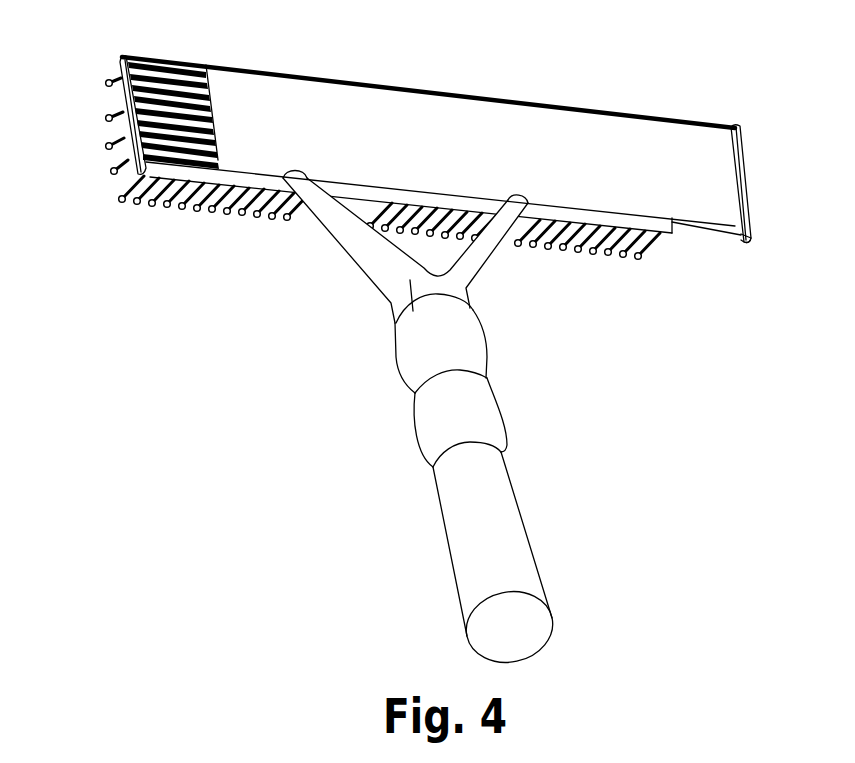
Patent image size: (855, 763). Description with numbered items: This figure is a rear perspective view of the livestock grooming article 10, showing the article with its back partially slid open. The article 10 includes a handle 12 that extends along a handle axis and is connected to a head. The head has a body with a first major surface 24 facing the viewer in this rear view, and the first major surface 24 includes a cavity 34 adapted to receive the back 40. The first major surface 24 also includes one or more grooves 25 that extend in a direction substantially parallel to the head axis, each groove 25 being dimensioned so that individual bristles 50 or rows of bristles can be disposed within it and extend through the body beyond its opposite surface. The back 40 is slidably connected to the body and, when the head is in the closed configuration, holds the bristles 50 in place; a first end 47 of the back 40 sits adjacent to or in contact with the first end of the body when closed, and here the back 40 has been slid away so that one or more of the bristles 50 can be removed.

The livestock grooming article 10 is at (541, 78).
The handle 12 is at (526, 523).
The first major surface 24 is at (216, 58).
The grooves 25 is at (162, 63).
The cavity 34 is at (161, 148).
The back 40 is at (739, 127).
The first end of the back 47 is at (744, 244).
The bristles 50 is at (112, 148).